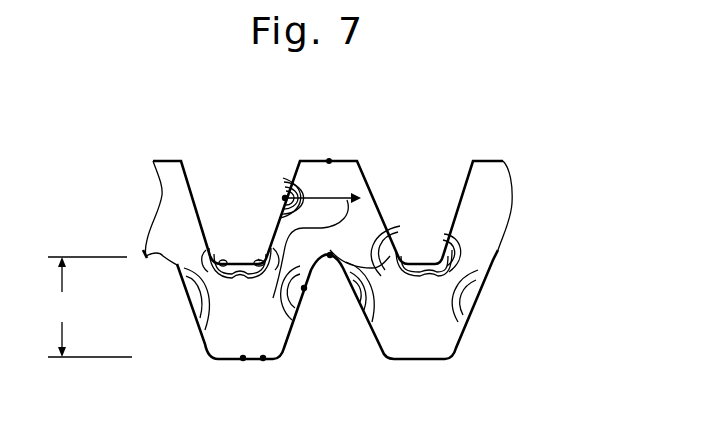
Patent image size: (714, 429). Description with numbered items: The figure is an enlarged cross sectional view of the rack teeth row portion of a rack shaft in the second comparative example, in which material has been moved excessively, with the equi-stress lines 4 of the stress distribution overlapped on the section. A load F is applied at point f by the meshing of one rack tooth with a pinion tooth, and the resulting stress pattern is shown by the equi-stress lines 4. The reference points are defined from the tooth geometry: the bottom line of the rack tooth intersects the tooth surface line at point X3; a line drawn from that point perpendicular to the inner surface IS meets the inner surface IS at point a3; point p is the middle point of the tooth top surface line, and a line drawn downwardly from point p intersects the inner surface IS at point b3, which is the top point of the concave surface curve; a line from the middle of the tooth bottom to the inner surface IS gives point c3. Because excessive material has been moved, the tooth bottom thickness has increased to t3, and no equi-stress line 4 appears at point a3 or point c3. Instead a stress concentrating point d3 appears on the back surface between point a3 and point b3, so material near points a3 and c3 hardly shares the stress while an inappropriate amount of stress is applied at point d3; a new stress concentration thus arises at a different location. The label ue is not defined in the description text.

The equi-stress line 4 is at (272, 297).
The point p is at (330, 161).
The point f is at (284, 198).
The load F is at (323, 188).
The point X3 is at (258, 259).
The tooth bottom thickness t3 is at (90, 307).
The point b3 is at (330, 255).
The stress concentrating point d3 is at (304, 288).
The point c3 is at (243, 358).
The point a3 is at (263, 358).
The external thread ue is at (351, 380).
The inner surface IS is at (467, 328).